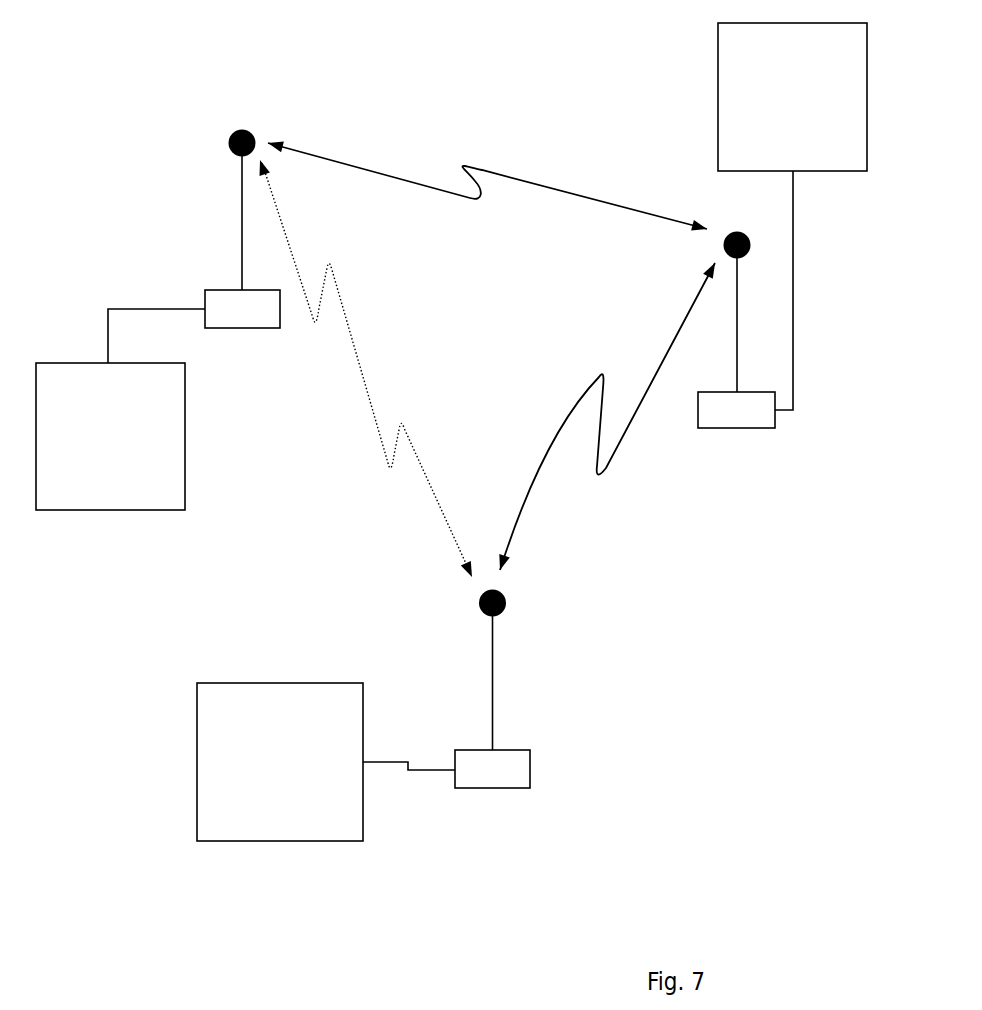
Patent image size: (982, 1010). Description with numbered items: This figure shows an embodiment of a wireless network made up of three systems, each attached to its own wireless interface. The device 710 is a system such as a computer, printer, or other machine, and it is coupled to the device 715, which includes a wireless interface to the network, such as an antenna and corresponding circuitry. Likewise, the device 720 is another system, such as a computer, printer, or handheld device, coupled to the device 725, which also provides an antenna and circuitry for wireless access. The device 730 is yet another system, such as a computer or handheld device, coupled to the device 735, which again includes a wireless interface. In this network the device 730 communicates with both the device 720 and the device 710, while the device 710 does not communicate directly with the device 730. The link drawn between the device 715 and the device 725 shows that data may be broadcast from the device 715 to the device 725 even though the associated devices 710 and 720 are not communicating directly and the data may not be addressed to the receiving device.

The device 710 is at (162, 491).
The device 715 is at (194, 288).
The device 720 is at (338, 818).
The device 725 is at (446, 749).
The device 730 is at (845, 147).
The device 735 is at (745, 354).